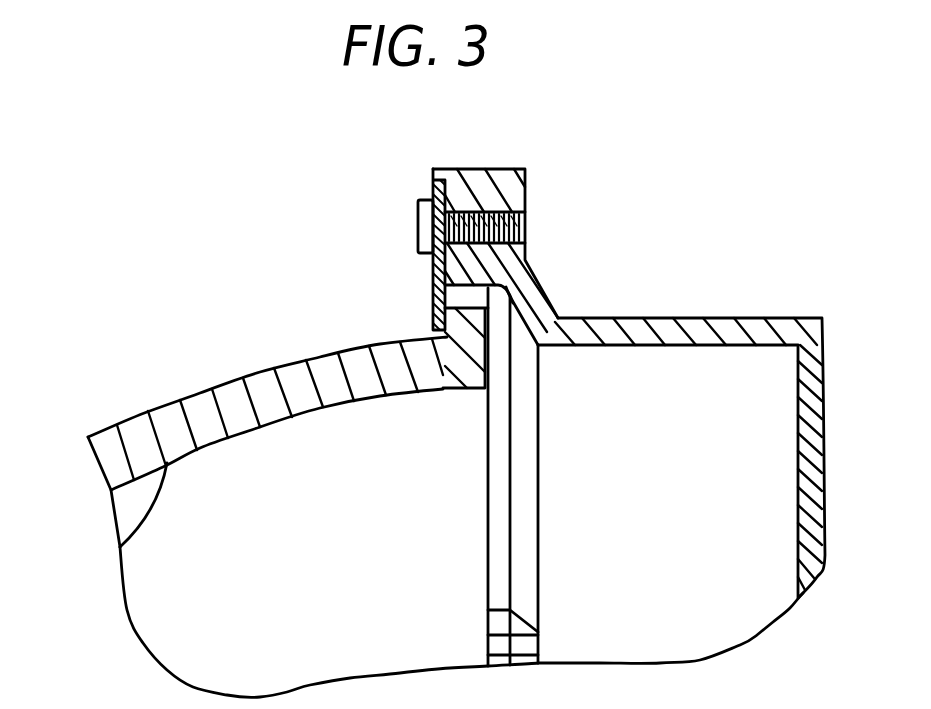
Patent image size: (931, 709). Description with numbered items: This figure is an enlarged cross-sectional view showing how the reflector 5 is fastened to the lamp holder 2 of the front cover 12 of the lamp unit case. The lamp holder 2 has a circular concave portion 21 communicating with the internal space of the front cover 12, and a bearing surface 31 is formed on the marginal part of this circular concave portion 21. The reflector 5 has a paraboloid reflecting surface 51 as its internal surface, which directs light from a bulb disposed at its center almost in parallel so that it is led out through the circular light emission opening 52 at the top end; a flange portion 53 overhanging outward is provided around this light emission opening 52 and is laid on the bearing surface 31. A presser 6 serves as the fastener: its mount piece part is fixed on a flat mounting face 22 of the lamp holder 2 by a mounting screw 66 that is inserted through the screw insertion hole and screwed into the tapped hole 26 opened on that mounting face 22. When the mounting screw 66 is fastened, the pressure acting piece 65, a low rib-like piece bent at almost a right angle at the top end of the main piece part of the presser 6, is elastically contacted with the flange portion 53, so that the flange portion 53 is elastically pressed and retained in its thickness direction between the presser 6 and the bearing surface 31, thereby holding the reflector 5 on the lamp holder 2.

The lamp holder 2 is at (482, 168).
The mounting face 22 is at (437, 193).
The mounting screw 66 is at (418, 232).
The tapped hole 26 is at (525, 220).
The presser 6 is at (414, 281).
The circular concave portion 21 is at (513, 303).
The front cover 12 is at (707, 320).
The flange portion 53 is at (440, 305).
The reflector 5 is at (157, 410).
The pressure acting piece 65 is at (443, 385).
The light emission opening 52 is at (490, 505).
The bearing surface 31 is at (490, 650).
The reflecting surface 51 is at (120, 547).